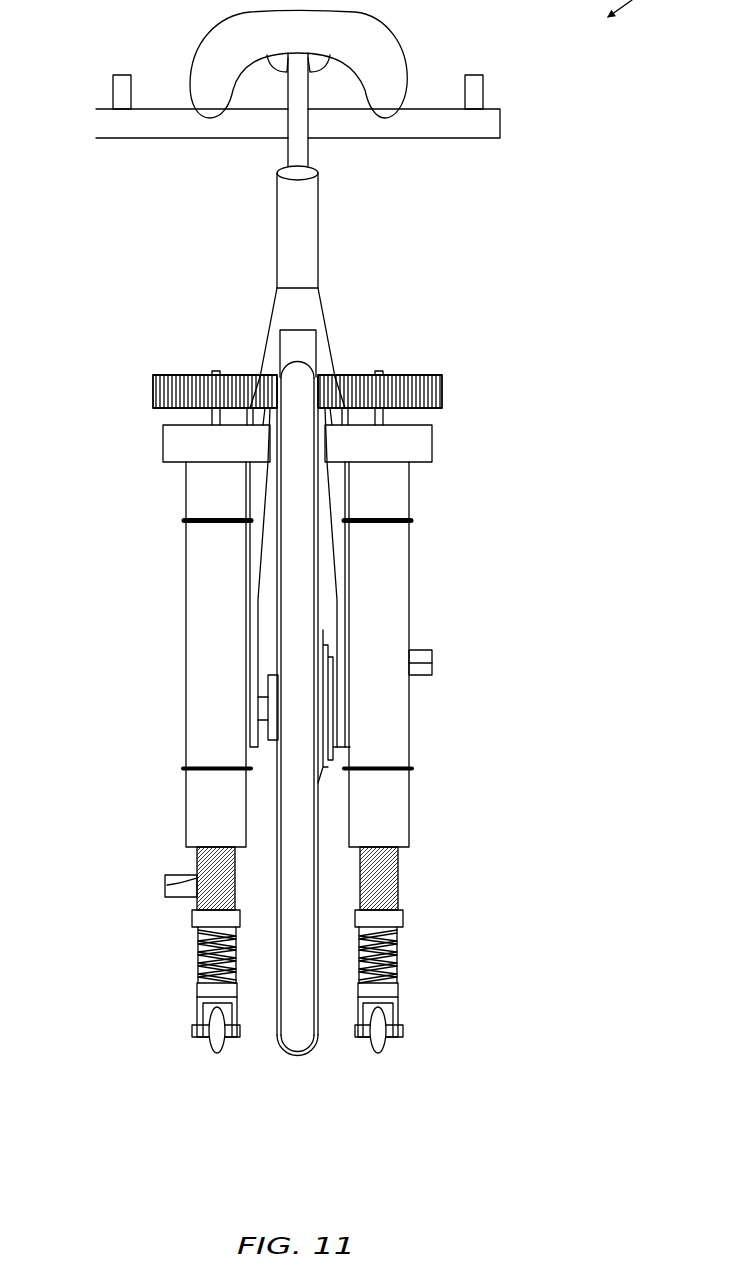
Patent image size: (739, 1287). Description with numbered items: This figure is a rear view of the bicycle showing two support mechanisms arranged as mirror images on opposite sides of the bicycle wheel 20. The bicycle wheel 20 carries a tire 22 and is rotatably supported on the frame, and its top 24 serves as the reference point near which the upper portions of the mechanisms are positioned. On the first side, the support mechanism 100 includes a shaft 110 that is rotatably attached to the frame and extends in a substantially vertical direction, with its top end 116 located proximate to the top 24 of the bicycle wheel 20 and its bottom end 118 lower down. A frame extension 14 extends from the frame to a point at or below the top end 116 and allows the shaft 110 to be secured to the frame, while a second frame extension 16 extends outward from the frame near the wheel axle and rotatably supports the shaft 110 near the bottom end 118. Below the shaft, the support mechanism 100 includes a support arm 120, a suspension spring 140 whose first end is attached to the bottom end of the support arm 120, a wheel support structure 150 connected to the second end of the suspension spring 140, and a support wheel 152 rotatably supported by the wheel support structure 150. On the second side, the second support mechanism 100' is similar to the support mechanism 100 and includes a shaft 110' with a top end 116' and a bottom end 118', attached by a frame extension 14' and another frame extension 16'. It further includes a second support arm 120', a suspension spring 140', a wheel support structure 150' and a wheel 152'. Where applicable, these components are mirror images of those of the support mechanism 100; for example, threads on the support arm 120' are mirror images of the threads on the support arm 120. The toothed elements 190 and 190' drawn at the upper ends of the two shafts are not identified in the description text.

The bicycle wheel 20 is at (320, 1100).
The tire 22 is at (298, 1057).
The top of the bicycle wheel 24 is at (298, 362).
The frame extension 14 is at (422, 540).
The frame extension 14' is at (170, 539).
The second frame extension 16 is at (423, 786).
The frame extension 16' is at (170, 786).
The support mechanism 100 is at (457, 381).
The second support mechanism 100' is at (126, 381).
The shaft 110 is at (429, 654).
The shaft 110' is at (163, 654).
The top end 116 is at (429, 450).
The top end 116' is at (162, 450).
The bottom end 118 is at (418, 878).
The bottom end 118' is at (172, 878).
The support arm 120 is at (429, 906).
The second support arm 120' is at (142, 896).
The suspension spring 140 is at (432, 948).
The suspension spring 140' is at (164, 930).
The wheel support structure 150 is at (429, 989).
The wheel support structure 150' is at (162, 955).
The support wheel 152 is at (430, 1046).
The wheel 152' is at (171, 1036).
The gear 190 is at (399, 359).
The gear 190' is at (186, 359).